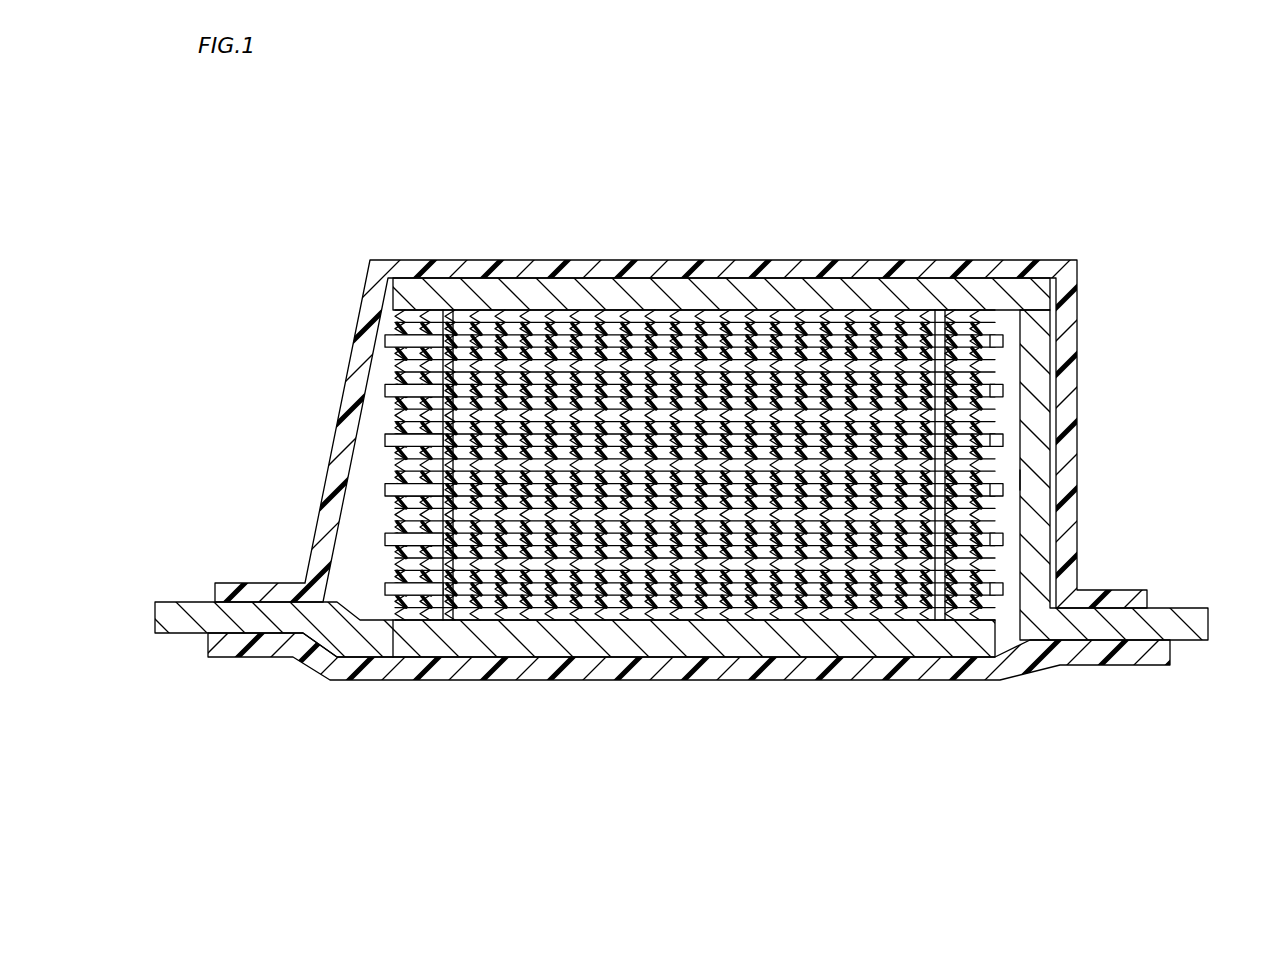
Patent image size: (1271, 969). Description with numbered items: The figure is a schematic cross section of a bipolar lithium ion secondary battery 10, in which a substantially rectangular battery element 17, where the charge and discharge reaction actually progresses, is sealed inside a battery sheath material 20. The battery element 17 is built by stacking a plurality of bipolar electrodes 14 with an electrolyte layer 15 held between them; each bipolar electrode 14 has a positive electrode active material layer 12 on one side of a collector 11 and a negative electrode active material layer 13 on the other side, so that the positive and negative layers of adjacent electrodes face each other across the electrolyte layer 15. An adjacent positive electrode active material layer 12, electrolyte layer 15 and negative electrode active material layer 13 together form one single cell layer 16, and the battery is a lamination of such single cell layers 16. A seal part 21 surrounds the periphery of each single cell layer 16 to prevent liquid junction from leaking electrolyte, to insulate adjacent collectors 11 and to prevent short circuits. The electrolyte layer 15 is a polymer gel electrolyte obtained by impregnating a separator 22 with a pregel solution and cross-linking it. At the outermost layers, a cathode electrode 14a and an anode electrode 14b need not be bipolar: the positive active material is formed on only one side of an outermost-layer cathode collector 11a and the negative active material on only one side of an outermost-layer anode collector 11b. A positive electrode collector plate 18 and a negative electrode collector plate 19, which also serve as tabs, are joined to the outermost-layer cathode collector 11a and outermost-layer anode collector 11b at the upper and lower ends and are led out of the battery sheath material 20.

The bipolar lithium ion secondary battery 10 is at (945, 176).
The collector 11 is at (712, 357).
The outermost-layer cathode collector 11a is at (853, 316).
The outermost-layer anode collector 11b is at (866, 625).
The positive electrode active material layer 12 is at (483, 372).
The negative electrode active material layer 13 is at (596, 400).
The bipolar electrode 14 is at (685, 745).
The cathode electrode 14a is at (635, 427).
The anode electrode 14b is at (635, 523).
The electrolyte layer 15 is at (540, 385).
The single cell layer 16 is at (617, 213).
The battery element 17 is at (1010, 477).
The positive electrode collector plate 18 is at (1168, 625).
The negative electrode collector plate 19 is at (242, 613).
The battery sheath material 20 is at (347, 432).
The seal part 21 is at (996, 355).
The separator 22 is at (996, 447).